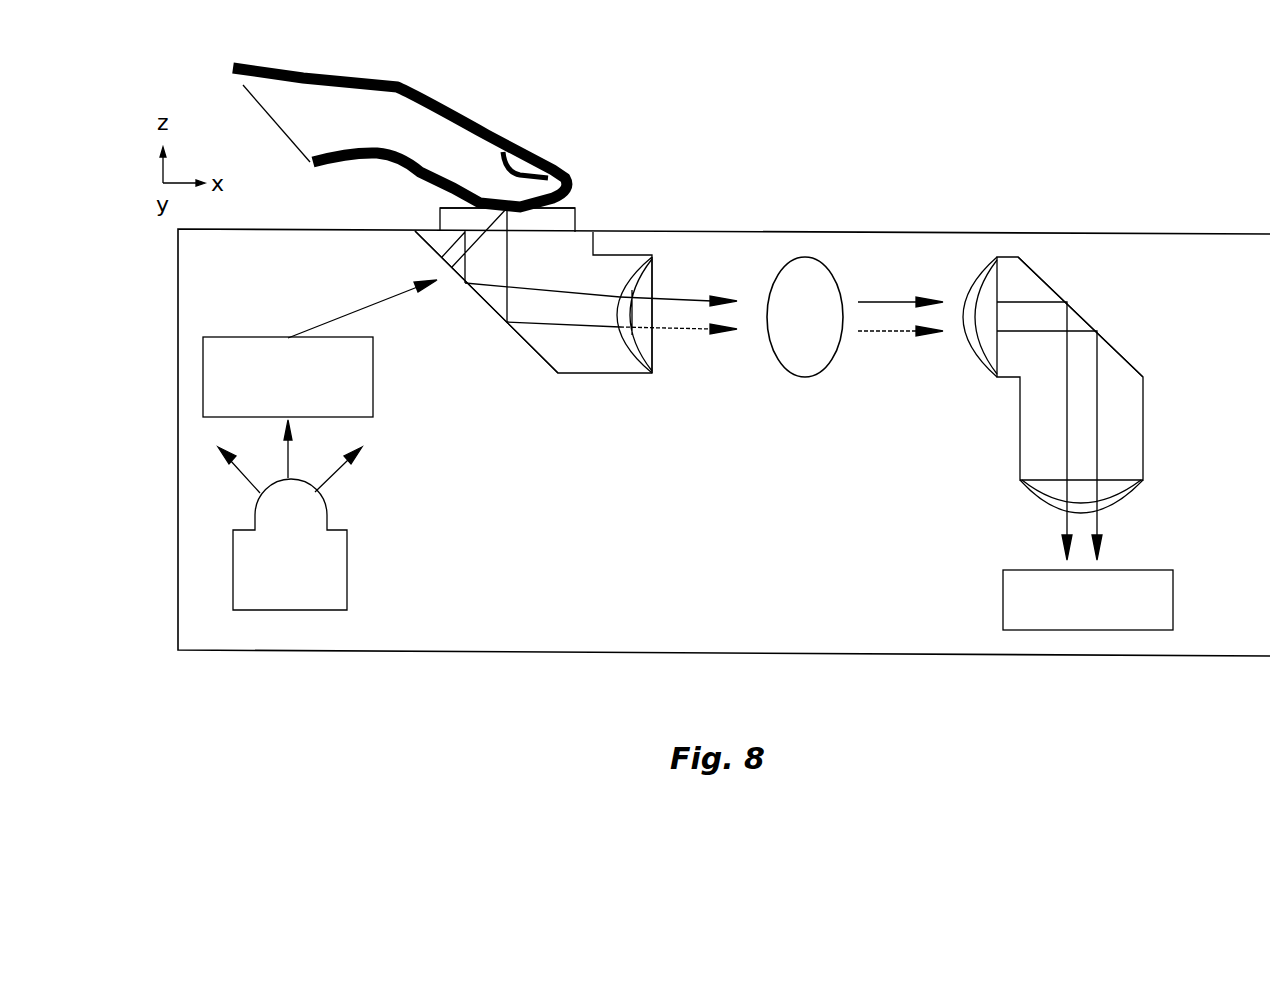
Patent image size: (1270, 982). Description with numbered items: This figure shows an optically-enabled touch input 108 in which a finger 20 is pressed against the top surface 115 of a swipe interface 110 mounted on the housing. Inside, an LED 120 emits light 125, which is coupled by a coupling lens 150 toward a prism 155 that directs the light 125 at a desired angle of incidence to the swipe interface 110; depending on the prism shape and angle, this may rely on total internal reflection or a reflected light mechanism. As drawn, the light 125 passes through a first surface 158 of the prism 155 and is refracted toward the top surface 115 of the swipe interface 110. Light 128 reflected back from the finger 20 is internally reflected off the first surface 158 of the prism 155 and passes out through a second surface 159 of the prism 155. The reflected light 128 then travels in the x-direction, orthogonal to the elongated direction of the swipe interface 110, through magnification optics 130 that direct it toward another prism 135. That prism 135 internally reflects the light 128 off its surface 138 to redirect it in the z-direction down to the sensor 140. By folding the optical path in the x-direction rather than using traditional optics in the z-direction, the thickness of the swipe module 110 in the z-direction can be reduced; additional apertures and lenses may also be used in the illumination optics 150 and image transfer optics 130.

The finger 20 is at (497, 125).
The optically-enabled touch input 108 is at (1042, 232).
The swipe interface 110 is at (562, 208).
The top surface 115 is at (577, 205).
The LED 120 is at (347, 577).
The light 125 is at (384, 298).
The reflected light 128 is at (870, 300).
The magnification optics 130 is at (972, 398).
The prism 135 is at (1125, 358).
The surface 138 is at (1057, 282).
The sensor 140 is at (1145, 570).
The coupling lens 150 is at (270, 337).
The prism 155 is at (606, 375).
The first surface 158 is at (497, 313).
The second surface 159 is at (653, 260).